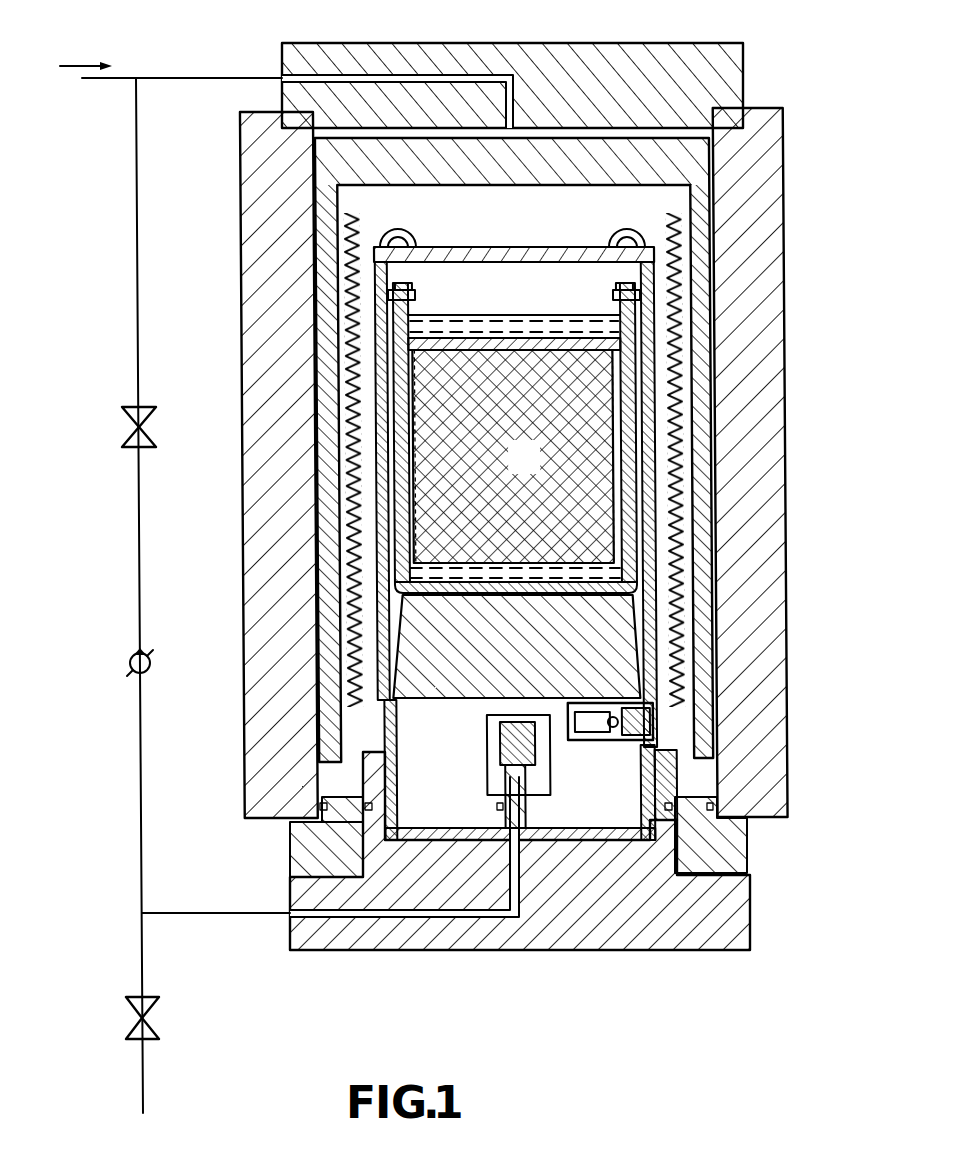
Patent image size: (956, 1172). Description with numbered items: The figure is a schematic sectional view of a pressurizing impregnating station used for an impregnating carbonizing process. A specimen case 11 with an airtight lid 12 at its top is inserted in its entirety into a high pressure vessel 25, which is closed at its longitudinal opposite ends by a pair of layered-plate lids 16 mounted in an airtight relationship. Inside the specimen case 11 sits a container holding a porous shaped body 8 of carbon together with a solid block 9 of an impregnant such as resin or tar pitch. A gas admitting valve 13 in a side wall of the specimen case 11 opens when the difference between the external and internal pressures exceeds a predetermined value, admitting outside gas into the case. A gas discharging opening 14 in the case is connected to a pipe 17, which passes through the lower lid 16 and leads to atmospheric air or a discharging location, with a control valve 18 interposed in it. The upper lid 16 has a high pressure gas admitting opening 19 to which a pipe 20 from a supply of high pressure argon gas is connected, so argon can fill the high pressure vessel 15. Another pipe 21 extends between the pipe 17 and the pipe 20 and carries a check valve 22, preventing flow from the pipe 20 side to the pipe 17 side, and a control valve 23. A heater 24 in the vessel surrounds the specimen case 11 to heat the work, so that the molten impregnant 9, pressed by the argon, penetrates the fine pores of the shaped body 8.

The shaped body 8 is at (537, 472).
The solid block of impregnant 9 is at (566, 578).
The specimen case 11 is at (375, 708).
The lid 12 is at (650, 270).
The gas admitting valve 13 is at (618, 741).
The gas discharging opening 14 is at (492, 778).
The high pressure vessel 15 is at (650, 525).
The lid 16 is at (743, 63).
The pipe 17 is at (192, 913).
The control valve 18 is at (156, 1008).
The high pressure gas admitting opening 19 is at (517, 128).
The pipe 20 is at (125, 78).
The pipe 21 is at (142, 766).
The check valve 22 is at (148, 655).
The control valve 23 is at (150, 417).
The heater 24 is at (680, 217).
The high pressure vessel 25 is at (786, 700).